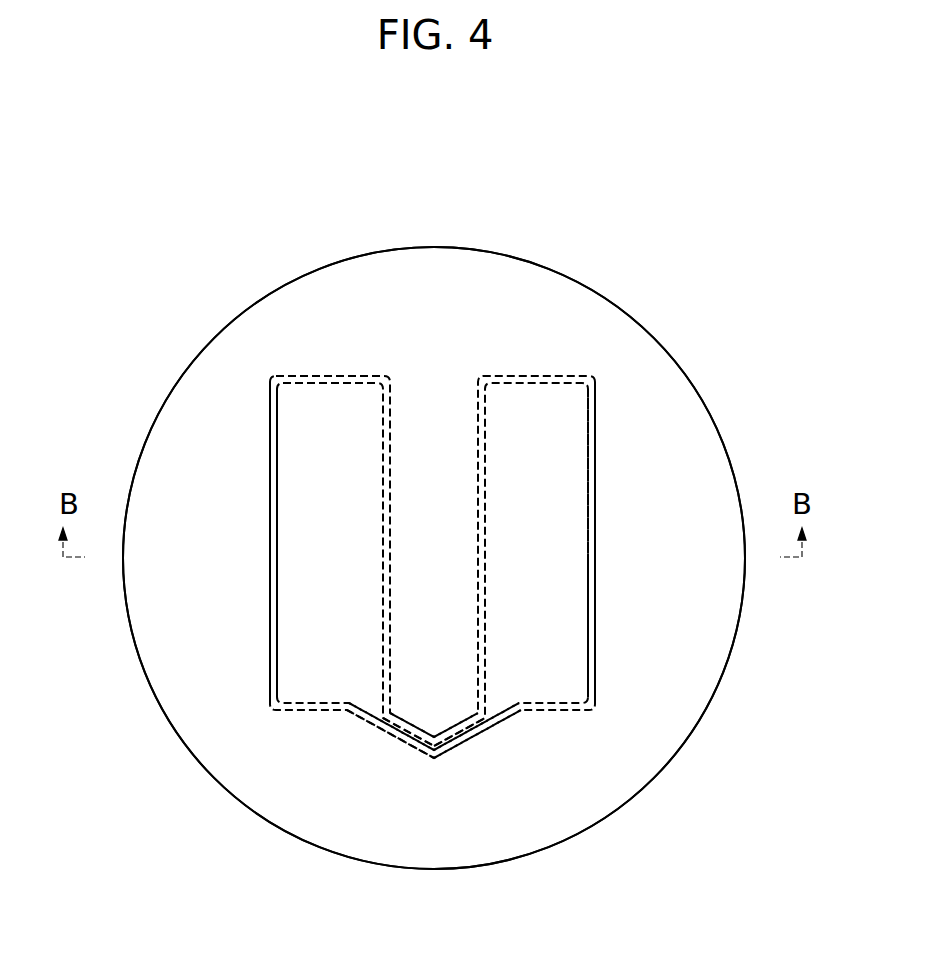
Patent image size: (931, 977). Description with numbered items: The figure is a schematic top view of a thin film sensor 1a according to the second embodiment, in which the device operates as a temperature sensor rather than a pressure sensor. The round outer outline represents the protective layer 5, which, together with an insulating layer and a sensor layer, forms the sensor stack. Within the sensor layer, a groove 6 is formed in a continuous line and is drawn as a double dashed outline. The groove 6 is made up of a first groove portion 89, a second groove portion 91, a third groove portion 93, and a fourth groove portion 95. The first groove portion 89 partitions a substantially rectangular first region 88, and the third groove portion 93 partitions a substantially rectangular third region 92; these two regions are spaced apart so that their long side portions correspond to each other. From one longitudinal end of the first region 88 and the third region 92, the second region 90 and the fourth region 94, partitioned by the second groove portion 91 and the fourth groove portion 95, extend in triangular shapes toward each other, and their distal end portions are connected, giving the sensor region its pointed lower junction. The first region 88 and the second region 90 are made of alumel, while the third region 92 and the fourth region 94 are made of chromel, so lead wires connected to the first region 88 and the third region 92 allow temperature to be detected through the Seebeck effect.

The thin film sensor 1a is at (672, 158).
The protective layer 5 is at (683, 372).
The groove 6 is at (558, 375).
The first region 88 is at (307, 420).
The first groove portion 89 is at (337, 376).
The second region 90 is at (372, 720).
The second groove portion 91 is at (408, 722).
The third region 92 is at (565, 488).
The third groove portion 93 is at (598, 598).
The fourth region 94 is at (495, 715).
The fourth groove portion 95 is at (470, 740).